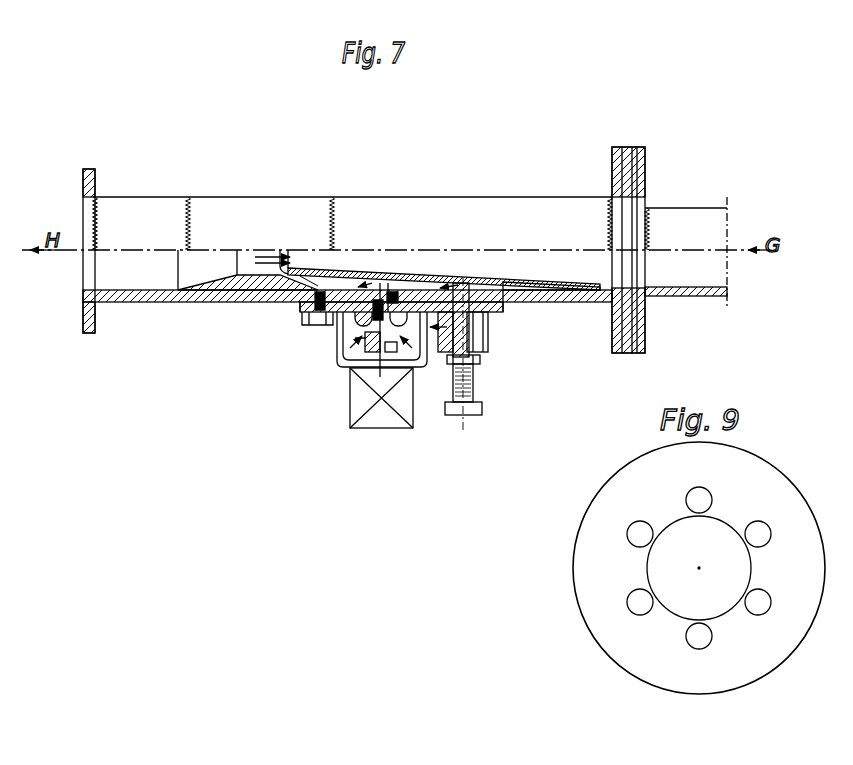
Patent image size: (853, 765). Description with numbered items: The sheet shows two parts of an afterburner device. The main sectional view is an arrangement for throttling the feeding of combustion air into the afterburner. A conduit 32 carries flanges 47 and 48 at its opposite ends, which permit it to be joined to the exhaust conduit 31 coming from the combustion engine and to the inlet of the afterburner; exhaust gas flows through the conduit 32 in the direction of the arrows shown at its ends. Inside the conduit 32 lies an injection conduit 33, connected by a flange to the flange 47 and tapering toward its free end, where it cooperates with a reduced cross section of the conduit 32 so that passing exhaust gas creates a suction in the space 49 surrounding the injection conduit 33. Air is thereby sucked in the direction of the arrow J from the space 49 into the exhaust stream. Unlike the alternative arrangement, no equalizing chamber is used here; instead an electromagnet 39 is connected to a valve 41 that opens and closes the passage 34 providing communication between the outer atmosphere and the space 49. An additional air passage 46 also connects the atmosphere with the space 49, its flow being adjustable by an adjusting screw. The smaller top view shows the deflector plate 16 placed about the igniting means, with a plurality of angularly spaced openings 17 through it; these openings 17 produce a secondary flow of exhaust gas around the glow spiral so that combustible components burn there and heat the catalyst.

In FIG. 7, the exhaust conduit 31 is at (690, 217).
In FIG. 7, the conduit 32 is at (443, 208).
In FIG. 7, the injection conduit 33 is at (535, 290).
In FIG. 7, the passage 34 is at (362, 323).
In FIG. 7, the electromagnet 39 is at (403, 408).
In FIG. 7, the valve 41 is at (358, 345).
In FIG. 7, the additional air passage 46 is at (457, 330).
In FIG. 7, the flange 47 is at (622, 160).
In FIG. 7, the flange 48 is at (93, 172).
In FIG. 7, the space 49 is at (397, 287).
In FIG. 7, the arrow J is at (317, 278).
In FIG. 9, the deflector plate 16 is at (757, 477).
In FIG. 9, the openings 17 is at (763, 535).